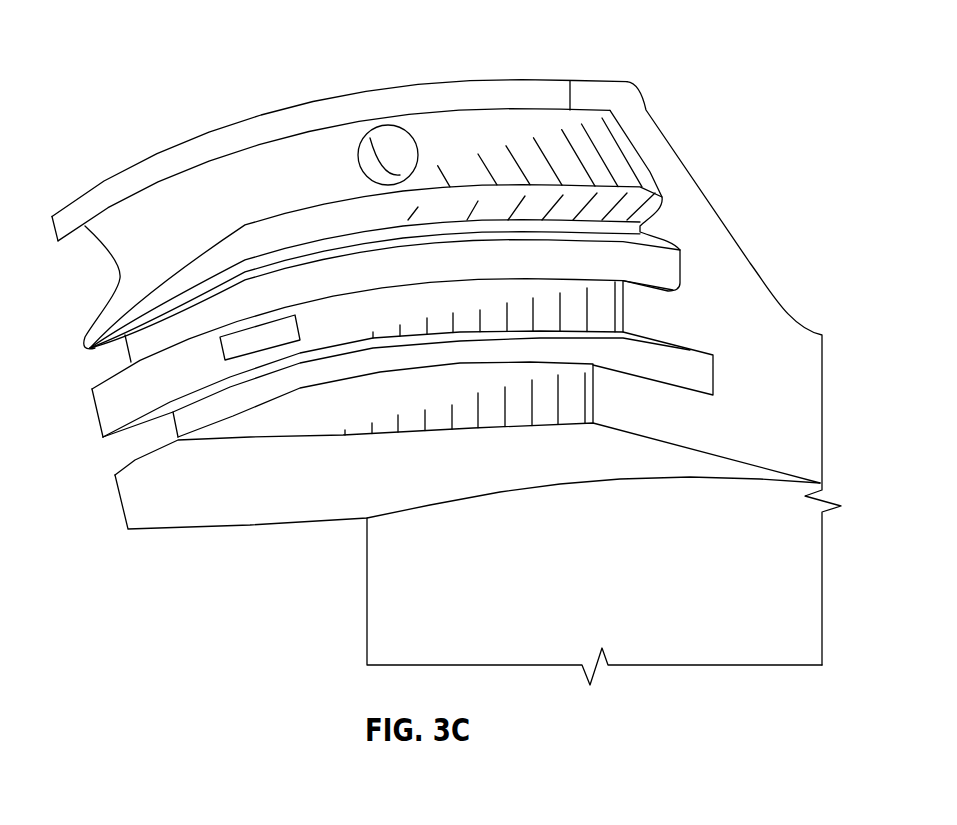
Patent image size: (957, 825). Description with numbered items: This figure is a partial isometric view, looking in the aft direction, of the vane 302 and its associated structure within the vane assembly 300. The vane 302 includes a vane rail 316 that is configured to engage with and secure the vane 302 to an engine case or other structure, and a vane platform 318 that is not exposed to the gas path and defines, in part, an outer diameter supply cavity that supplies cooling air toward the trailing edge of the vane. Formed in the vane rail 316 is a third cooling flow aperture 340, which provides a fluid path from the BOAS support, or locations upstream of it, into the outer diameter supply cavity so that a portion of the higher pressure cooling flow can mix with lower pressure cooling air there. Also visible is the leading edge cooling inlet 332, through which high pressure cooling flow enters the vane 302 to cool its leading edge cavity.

The vane assembly 300 is at (196, 60).
The vane 302 is at (390, 590).
The vane rail 316 is at (588, 93).
The vane platform 318 is at (741, 445).
The leading edge cooling inlet 332 is at (232, 358).
The third cooling flow aperture 340 is at (372, 137).